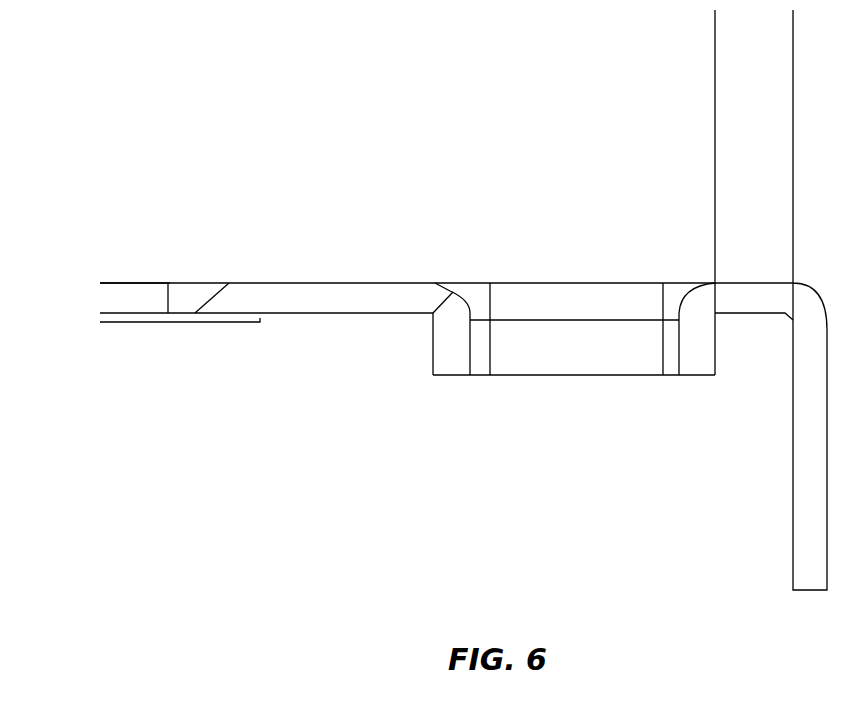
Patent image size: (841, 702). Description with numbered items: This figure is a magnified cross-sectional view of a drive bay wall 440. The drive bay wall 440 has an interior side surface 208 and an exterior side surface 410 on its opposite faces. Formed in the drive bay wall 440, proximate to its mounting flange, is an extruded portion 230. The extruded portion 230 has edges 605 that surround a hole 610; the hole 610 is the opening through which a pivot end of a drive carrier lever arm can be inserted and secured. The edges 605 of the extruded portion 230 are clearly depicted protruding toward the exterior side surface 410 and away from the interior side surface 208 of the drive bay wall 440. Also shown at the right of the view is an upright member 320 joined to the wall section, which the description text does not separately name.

The drive bay wall 440 is at (127, 281).
The interior side surface 208 is at (355, 283).
The exterior side surface 410 is at (358, 315).
The edges 605 is at (455, 357).
The hole 610 is at (558, 377).
The extruded portion 230 is at (663, 258).
The post 320 is at (793, 548).